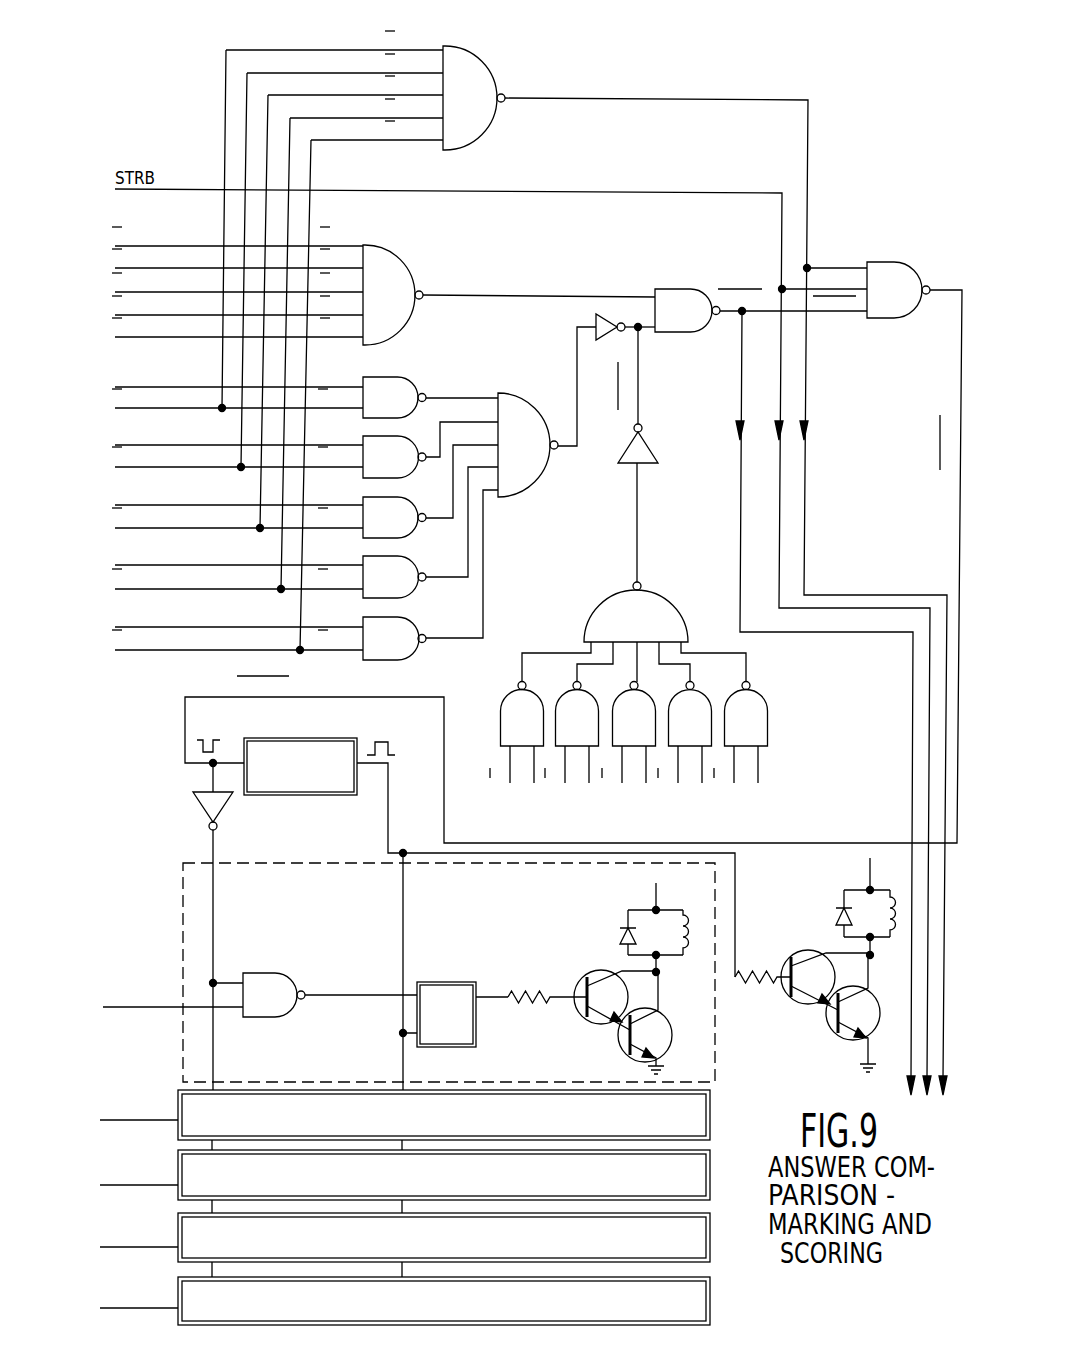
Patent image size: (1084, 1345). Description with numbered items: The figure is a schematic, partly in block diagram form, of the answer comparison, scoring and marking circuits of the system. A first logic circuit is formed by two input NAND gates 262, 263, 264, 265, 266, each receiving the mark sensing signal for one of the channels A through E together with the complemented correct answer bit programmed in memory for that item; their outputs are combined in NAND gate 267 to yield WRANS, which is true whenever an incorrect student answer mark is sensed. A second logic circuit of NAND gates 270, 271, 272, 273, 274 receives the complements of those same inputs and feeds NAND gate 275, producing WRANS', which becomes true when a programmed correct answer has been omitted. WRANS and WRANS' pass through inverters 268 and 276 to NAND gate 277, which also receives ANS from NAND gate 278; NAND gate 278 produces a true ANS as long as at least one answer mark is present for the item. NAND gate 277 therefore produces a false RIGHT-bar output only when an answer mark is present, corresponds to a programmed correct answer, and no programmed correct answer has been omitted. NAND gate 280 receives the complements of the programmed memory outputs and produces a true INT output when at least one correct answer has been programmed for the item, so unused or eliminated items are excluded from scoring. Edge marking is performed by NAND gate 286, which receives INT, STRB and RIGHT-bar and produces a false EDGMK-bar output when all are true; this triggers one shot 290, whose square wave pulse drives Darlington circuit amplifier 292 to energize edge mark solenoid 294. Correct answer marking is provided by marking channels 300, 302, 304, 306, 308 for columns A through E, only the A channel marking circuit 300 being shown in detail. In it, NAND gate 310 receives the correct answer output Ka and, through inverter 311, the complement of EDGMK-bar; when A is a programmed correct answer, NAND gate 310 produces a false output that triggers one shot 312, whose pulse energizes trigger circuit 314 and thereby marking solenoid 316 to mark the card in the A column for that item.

The NAND gate 280 is at (489, 44).
The NAND gate 278 is at (411, 242).
The two input NAND gate 262 is at (416, 369).
The two input NAND gate 263 is at (407, 426).
The two input NAND gate 264 is at (411, 484).
The two input NAND gate 265 is at (416, 542).
The two input NAND gate 266 is at (416, 602).
The NAND gate 267 is at (532, 386).
The inverter 268 is at (594, 332).
The inverter 276 is at (650, 443).
The NAND gate 277 is at (682, 270).
The NAND gate 286 is at (911, 246).
The NAND gate 275 is at (662, 579).
The NAND gate 270 is at (507, 734).
The NAND gate 271 is at (562, 734).
The NAND gate 272 is at (619, 734).
The NAND gate 273 is at (675, 734).
The NAND gate 274 is at (731, 734).
The one shot 290 is at (313, 738).
The inverter 311 is at (195, 802).
The A channel marking circuit 300 is at (590, 891).
The NAND gate 310 is at (299, 964).
The one shot 312 is at (467, 982).
The trigger circuit 314 is at (600, 972).
The marking solenoid 316 is at (707, 900).
The Darlington circuit amplifier 292 is at (800, 955).
The edge mark solenoid 294 is at (907, 872).
The marking channel 302 is at (712, 1118).
The marking channel 304 is at (712, 1178).
The marking channel 306 is at (712, 1240).
The marking channel 308 is at (712, 1302).